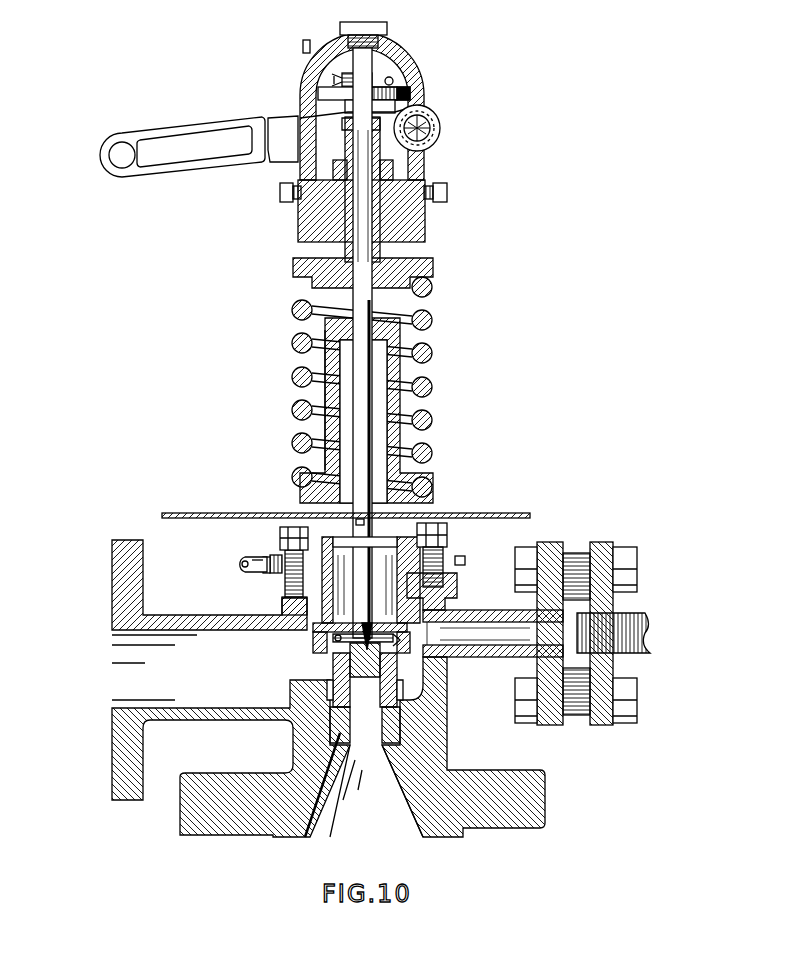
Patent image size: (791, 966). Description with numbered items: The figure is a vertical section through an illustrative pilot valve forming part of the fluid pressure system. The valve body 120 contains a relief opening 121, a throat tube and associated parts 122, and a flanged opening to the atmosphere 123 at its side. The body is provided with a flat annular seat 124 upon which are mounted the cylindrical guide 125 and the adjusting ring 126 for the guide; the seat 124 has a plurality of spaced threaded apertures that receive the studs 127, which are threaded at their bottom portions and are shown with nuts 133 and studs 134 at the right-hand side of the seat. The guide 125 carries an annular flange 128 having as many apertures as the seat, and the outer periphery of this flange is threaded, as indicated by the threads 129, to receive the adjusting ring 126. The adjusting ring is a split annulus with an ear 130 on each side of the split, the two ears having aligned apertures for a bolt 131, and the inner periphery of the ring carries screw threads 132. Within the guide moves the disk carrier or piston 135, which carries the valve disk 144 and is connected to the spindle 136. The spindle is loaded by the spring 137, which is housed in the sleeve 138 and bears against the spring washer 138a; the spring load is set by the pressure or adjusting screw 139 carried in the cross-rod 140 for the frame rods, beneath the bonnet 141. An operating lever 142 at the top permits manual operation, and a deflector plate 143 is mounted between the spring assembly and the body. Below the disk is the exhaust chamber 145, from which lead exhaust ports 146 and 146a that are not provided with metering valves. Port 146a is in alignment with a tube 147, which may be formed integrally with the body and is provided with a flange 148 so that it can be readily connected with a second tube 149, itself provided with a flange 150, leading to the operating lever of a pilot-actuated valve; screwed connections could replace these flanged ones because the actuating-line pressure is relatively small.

The valve body 120 is at (282, 612).
The relief opening 121 is at (402, 805).
The throat tube and associated parts 122 is at (380, 718).
The flanged opening to the atmosphere 123 is at (115, 666).
The flat annular seat 124 is at (285, 582).
The cylindrical guide 125 is at (315, 634).
The adjusting ring 126 is at (275, 558).
The studs 127 is at (443, 588).
The annular flange 128 is at (270, 575).
The threads on outer periphery of the flange 129 is at (282, 546).
The ear 130 is at (240, 562).
The bolt 131 is at (248, 568).
The screw threads 132 is at (466, 561).
The nut 133 is at (448, 532).
The stud 134 is at (455, 548).
The disk carrier or piston 135 is at (328, 590).
The spindle 136 is at (400, 504).
The spring 137 is at (302, 312).
The sleeve for the spring 138 is at (323, 356).
The spring washer 138a is at (432, 275).
The pressure or adjusting screw 139 is at (380, 254).
The cross-rod for the frame rods 140 is at (418, 228).
The bonnet 141 is at (420, 64).
The operating lever 142 is at (232, 116).
The deflector plate 143 is at (520, 512).
The valve disk 144 is at (333, 688).
The exhaust chamber 145 is at (340, 645).
The exhaust port 146 is at (335, 642).
The exhaust port 146a is at (404, 640).
The tube 147 is at (496, 633).
The flange 148 is at (550, 545).
The second tube 149 is at (646, 616).
The flange 150 is at (615, 546).